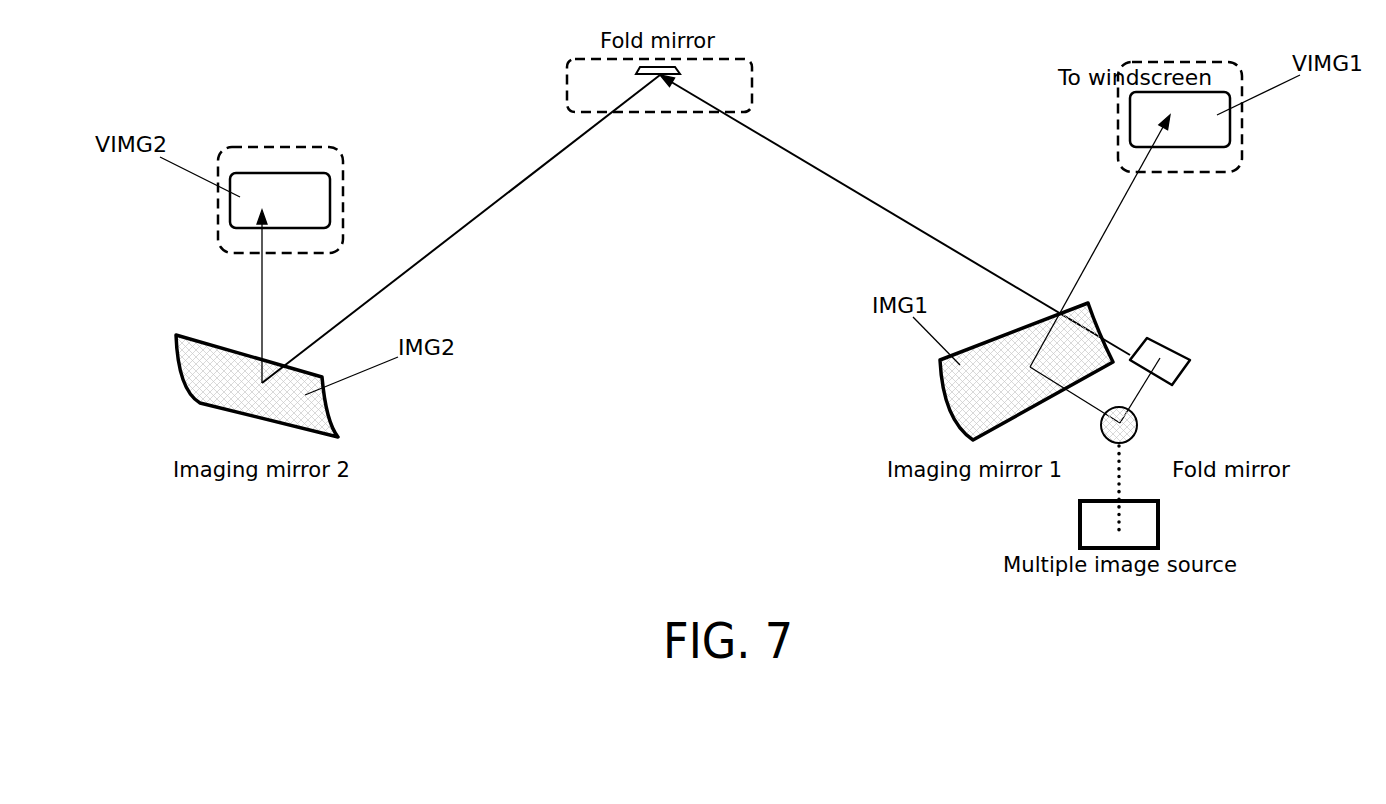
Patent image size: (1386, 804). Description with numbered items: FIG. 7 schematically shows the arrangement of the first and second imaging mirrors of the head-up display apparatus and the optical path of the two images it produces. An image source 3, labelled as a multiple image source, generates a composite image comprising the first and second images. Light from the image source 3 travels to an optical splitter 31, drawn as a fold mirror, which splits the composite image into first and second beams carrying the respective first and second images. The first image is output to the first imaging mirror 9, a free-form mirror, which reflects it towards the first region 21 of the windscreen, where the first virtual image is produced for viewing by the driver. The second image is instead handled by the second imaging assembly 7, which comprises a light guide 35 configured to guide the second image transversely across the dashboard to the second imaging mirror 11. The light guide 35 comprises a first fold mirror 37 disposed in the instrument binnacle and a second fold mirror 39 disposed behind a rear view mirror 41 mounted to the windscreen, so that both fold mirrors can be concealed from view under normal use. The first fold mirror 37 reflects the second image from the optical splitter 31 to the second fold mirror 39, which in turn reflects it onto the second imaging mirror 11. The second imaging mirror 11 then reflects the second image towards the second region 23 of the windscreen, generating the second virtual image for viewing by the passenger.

The image source 3 is at (1158, 528).
The second imaging assembly 7 is at (691, 300).
The first imaging mirror 9 is at (943, 383).
The second imaging mirror 11 is at (205, 343).
The first region 21 is at (1222, 72).
The second region 23 is at (250, 157).
The optical splitter 31 is at (1135, 424).
The light guide 35 is at (879, 119).
The first fold mirror 37 is at (1173, 358).
The second fold mirror 39 is at (678, 73).
The rear view mirror 41 is at (658, 110).